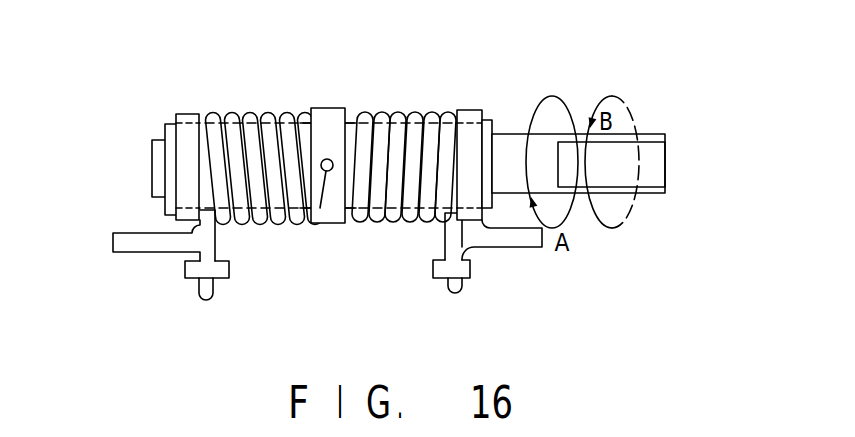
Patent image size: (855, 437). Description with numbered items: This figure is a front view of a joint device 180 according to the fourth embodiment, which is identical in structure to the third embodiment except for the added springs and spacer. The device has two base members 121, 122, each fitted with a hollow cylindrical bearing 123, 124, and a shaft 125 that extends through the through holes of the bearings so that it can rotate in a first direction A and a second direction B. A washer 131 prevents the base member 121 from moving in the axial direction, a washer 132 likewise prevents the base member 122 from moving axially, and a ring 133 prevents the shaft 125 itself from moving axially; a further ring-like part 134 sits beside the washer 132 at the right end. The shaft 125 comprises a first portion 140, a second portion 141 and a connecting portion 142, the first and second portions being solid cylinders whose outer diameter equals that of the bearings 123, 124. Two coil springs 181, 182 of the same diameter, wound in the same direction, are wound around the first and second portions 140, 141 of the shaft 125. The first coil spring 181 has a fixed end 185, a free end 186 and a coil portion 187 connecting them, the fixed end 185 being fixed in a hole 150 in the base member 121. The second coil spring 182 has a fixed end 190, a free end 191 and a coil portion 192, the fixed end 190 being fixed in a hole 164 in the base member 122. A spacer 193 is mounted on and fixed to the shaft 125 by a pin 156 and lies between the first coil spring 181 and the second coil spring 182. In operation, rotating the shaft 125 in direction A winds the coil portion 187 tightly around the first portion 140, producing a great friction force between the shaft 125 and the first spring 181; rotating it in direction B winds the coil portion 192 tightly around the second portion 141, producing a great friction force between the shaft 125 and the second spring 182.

The joint device 180 is at (112, 288).
The first coil spring 181 is at (264, 124).
The second coil spring 182 is at (430, 120).
The base member 121 is at (182, 242).
The base member 122 is at (488, 246).
The bearing 123 is at (238, 108).
The bearing 124 is at (421, 135).
The shaft 125 is at (305, 113).
The washer 131 is at (180, 112).
The washer 132 is at (484, 115).
The ring 133 is at (165, 129).
The right bushing 134 is at (494, 120).
The first portion 140 is at (287, 110).
The second portion 141 is at (360, 110).
The connecting portion 142 is at (655, 150).
The hole 150 is at (222, 280).
The pin 156 is at (322, 224).
The hole 164 is at (446, 280).
The fixed end 185 is at (197, 292).
The free end 186 is at (299, 222).
The coil portion 187 is at (270, 110).
The fixed end 190 is at (465, 288).
The free end 191 is at (356, 224).
The coil portion 192 is at (381, 110).
The spacer 193 is at (340, 226).